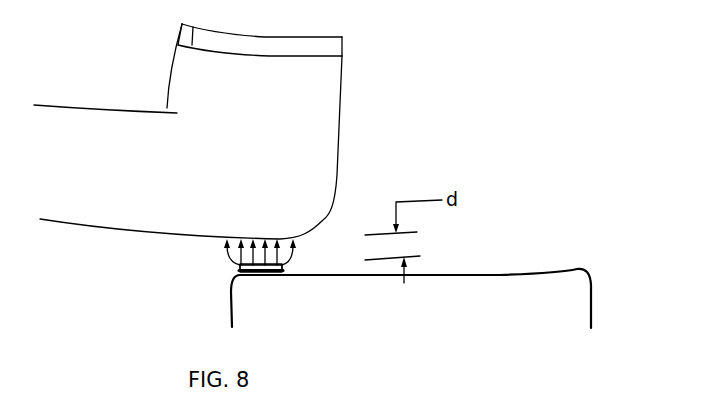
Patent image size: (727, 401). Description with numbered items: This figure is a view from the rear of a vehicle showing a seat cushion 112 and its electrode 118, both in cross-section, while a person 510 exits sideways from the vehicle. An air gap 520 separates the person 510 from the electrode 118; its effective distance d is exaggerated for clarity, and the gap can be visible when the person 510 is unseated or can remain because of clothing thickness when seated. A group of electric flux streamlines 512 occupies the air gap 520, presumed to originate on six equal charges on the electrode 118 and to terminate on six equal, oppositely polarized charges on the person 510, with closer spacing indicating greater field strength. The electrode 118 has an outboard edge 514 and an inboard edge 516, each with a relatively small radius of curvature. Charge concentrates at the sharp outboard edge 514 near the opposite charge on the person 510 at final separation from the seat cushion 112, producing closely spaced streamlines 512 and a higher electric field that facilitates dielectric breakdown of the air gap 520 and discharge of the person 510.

The seat cushion 112 is at (593, 302).
The electrode 118 is at (263, 272).
The person 510 is at (342, 73).
The electric flux streamlines 512 is at (220, 253).
The outboard edge 514 is at (237, 267).
The inboard edge 516 is at (282, 268).
The air gap 520 is at (305, 252).